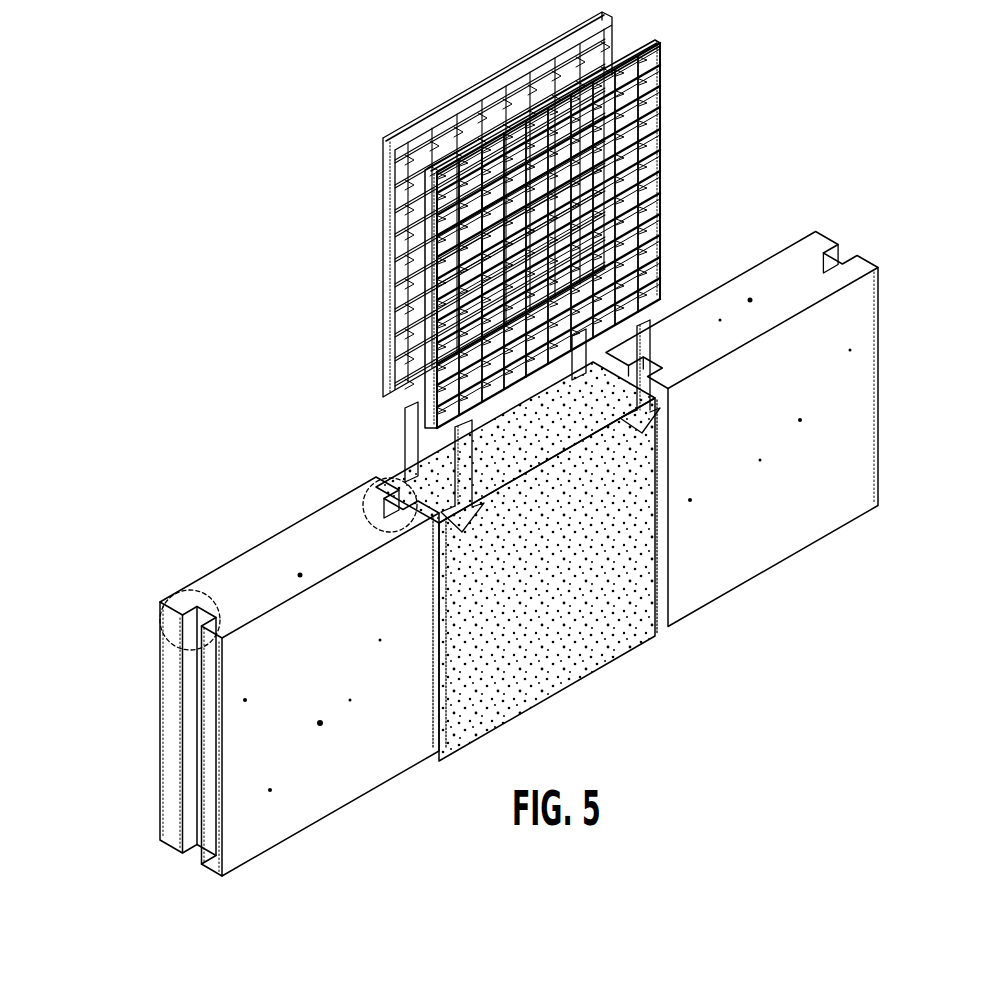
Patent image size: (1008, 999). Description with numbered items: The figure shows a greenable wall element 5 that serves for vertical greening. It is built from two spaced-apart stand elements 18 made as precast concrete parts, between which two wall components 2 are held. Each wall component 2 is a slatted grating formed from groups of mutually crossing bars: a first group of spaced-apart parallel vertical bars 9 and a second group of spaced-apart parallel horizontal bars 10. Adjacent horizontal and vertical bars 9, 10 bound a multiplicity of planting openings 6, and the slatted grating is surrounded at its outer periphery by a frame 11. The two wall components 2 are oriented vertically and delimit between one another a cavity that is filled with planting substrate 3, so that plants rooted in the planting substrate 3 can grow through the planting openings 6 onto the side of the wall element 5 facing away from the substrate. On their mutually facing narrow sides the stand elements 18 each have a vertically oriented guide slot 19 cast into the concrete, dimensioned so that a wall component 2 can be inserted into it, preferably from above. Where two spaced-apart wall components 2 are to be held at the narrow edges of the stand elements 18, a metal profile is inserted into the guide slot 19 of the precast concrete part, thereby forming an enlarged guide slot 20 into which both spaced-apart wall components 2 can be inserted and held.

The wall component 2 is at (513, 220).
The planting substrate 3 is at (600, 600).
The wall element 5 is at (762, 195).
The planting opening 6 is at (412, 345).
The vertical bars 9 is at (400, 250).
The horizontal bars 10 is at (404, 308).
The frame 11 is at (460, 97).
The stand element 18 is at (318, 722).
The guide slot 19 is at (850, 243).
The enlarged guide slot 20 is at (390, 462).